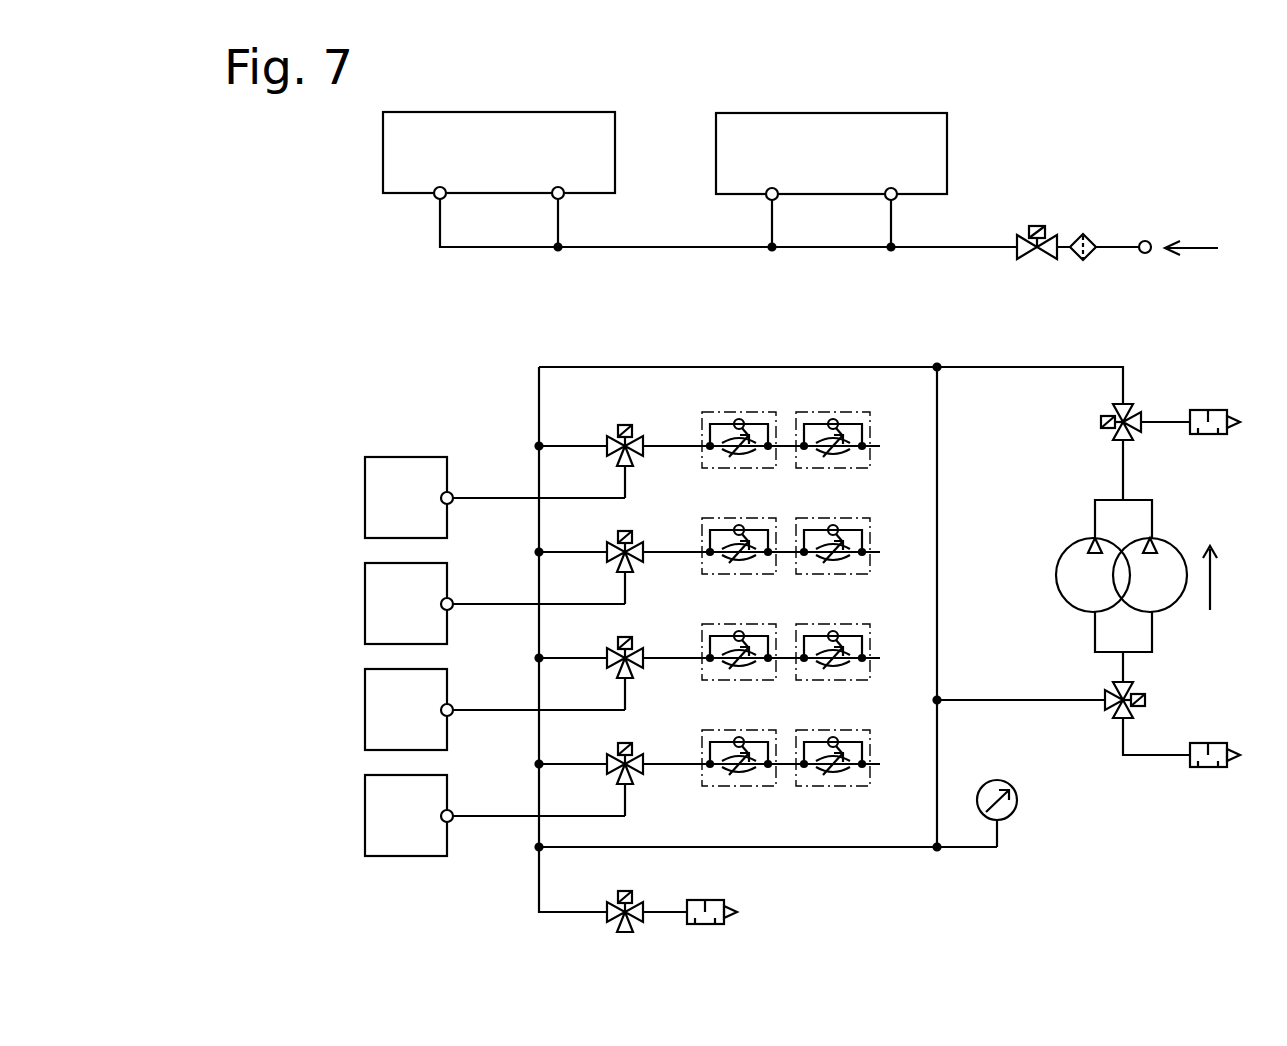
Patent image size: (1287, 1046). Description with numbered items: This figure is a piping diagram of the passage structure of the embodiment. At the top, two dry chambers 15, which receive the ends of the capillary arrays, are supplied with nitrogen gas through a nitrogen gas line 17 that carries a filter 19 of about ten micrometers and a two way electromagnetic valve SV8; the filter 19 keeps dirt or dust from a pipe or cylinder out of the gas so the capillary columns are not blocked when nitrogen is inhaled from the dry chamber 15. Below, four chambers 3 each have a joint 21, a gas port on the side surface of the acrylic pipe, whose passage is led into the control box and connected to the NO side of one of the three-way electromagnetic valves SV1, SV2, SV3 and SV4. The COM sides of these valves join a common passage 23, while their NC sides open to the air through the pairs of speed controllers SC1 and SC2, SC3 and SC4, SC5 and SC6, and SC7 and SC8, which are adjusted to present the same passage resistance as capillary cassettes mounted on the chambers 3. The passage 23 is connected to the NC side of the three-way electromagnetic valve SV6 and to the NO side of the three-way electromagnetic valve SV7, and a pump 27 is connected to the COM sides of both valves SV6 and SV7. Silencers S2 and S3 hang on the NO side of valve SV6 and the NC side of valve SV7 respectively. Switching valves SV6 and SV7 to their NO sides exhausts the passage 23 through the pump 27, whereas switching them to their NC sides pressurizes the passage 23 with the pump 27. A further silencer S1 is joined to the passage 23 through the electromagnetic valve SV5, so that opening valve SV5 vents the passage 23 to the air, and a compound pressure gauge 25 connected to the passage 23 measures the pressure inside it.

The dry chamber 15 is at (554, 112).
The nitrogen gas line 17 is at (947, 247).
The filter 19 is at (1089, 233).
The two way electromagnetic valve SV8 is at (1040, 226).
The passage 23 is at (722, 367).
The chamber 3 is at (365, 494).
The joint 21 is at (452, 495).
The three-way electromagnetic valve SV1 is at (632, 427).
The three-way electromagnetic valve SV2 is at (632, 533).
The three-way electromagnetic valve SV3 is at (632, 639).
The three-way electromagnetic valve SV4 is at (632, 745).
The electromagnetic valve SV5 is at (632, 896).
The three-way electromagnetic valve SV6 is at (1100, 422).
The three-way electromagnetic valve SV7 is at (1147, 700).
The speed controller SC1 is at (716, 412).
The speed controller SC2 is at (810, 412).
The speed controller SC3 is at (716, 518).
The speed controller SC4 is at (810, 518).
The speed controller SC5 is at (716, 624).
The speed controller SC6 is at (810, 624).
The speed controller SC7 is at (716, 730).
The speed controller SC8 is at (810, 730).
The silencer S1 is at (710, 900).
The silencer S2 is at (1212, 411).
The silencer S3 is at (1212, 744).
The compound pressure gauge 25 is at (1012, 787).
The pump 27 is at (1165, 546).